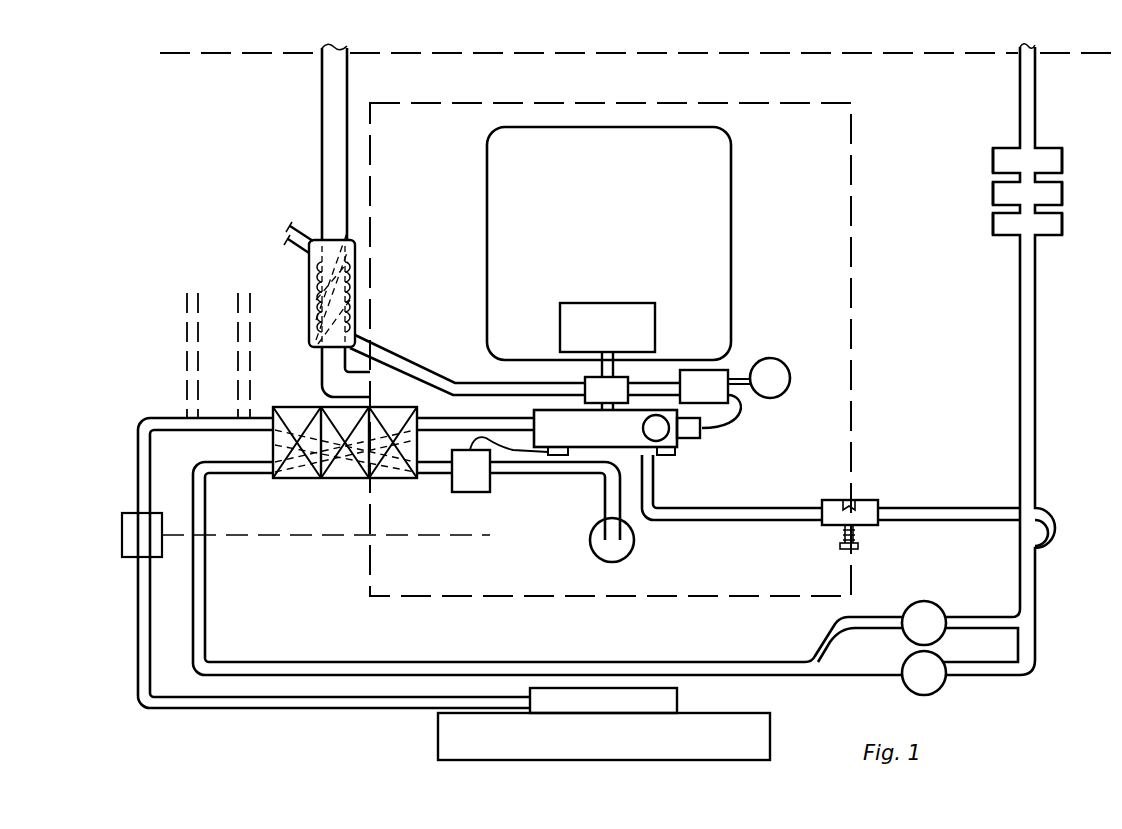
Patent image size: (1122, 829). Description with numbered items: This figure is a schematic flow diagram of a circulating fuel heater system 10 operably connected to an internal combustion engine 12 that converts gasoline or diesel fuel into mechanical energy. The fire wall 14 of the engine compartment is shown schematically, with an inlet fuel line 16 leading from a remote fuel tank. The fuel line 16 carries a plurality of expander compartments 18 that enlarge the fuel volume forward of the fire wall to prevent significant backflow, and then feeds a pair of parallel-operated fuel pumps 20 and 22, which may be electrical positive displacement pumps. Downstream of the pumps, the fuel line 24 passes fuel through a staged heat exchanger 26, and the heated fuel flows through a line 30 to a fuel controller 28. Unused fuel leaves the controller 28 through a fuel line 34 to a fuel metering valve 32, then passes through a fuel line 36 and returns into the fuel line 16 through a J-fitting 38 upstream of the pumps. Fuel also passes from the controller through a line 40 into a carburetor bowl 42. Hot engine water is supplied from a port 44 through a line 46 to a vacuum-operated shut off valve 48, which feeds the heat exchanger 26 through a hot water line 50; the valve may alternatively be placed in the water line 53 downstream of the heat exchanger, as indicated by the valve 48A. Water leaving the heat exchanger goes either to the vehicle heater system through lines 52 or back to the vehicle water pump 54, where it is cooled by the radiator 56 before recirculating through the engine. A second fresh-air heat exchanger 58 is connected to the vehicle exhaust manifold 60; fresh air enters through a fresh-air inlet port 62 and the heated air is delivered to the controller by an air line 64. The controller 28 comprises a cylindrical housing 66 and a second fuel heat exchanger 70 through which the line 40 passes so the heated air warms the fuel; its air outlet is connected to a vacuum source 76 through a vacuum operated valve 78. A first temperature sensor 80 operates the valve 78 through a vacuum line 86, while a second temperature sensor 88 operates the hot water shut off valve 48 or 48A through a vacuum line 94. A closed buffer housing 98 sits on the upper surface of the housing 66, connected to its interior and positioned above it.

The circulating fuel heater system 10 is at (1050, 569).
The internal combustion engine 12 is at (852, 262).
The fire wall 14 is at (897, 54).
The inlet fuel line 16 is at (1037, 88).
The expander compartments 18 is at (1055, 162).
The fuel pump 20 is at (915, 603).
The fuel pump 22 is at (940, 688).
The fuel line 24 is at (727, 667).
The staged heat exchanger 26 is at (335, 481).
The fuel controller 28 is at (677, 468).
The line 30 is at (458, 418).
The fuel metering valve 32 is at (872, 500).
The fuel line 34 is at (730, 522).
The fuel line 36 is at (943, 520).
The J-fitting 38 is at (1053, 514).
The line 40 is at (602, 375).
The carburetor bowl 42 is at (560, 314).
The port 44 is at (591, 541).
The line 46 is at (548, 475).
The vacuum-operated shut off valve 48 is at (468, 492).
The vacuum-operated shut off valve 48A is at (122, 530).
The hot water line 50 is at (430, 477).
The lines 52 is at (198, 307).
The water line 53 is at (142, 621).
The vehicle water pump 54 is at (678, 700).
The radiator 56 is at (438, 735).
The fresh-air heat exchanger 58 is at (309, 298).
The vehicle exhaust manifold 60 is at (322, 378).
The fresh-air inlet port 62 is at (293, 233).
The air line 64 is at (437, 376).
The cylindrical housing 66 is at (536, 419).
The second fuel heat exchanger 70 is at (586, 379).
The vacuum source 76 is at (781, 360).
The vacuum operated valve 78 is at (705, 376).
The first temperature sensor 80 is at (703, 432).
The vacuum line 86 is at (744, 416).
The second temperature sensor 88 is at (490, 535).
The vacuum line 94 is at (514, 455).
The buffer housing 98 is at (676, 453).